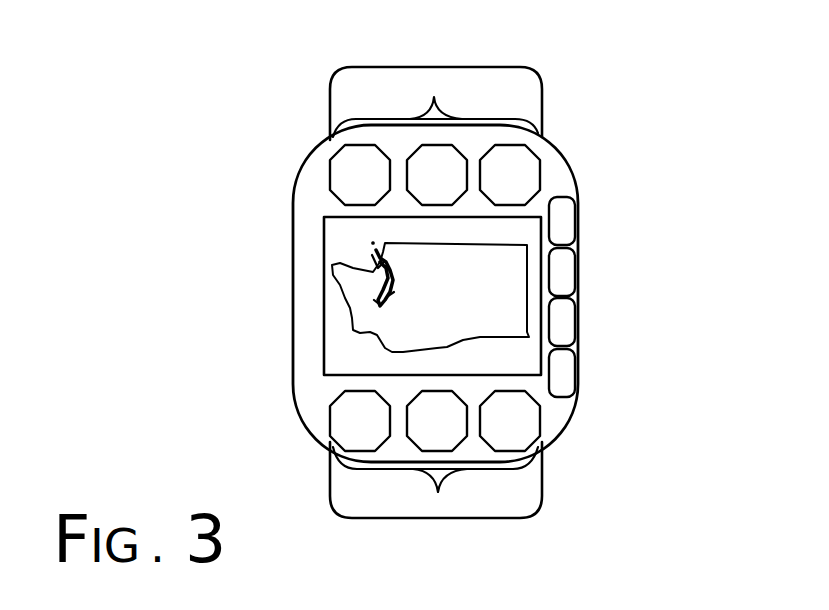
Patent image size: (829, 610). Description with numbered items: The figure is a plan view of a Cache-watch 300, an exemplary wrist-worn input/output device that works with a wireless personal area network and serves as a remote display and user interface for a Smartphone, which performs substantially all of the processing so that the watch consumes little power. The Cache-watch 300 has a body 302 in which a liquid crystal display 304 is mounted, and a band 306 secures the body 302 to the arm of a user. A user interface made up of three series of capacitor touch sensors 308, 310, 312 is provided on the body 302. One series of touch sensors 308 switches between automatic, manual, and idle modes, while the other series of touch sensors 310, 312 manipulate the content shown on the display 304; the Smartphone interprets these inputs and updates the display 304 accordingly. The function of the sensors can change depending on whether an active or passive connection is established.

The Cache-watch 300 is at (258, 129).
The body 302 is at (568, 155).
The liquid crystal display 304 is at (337, 247).
The first strap 306 is at (343, 92).
The touch sensors 308 is at (433, 97).
The touch sensors 310 is at (590, 205).
The touch sensors 312 is at (438, 492).